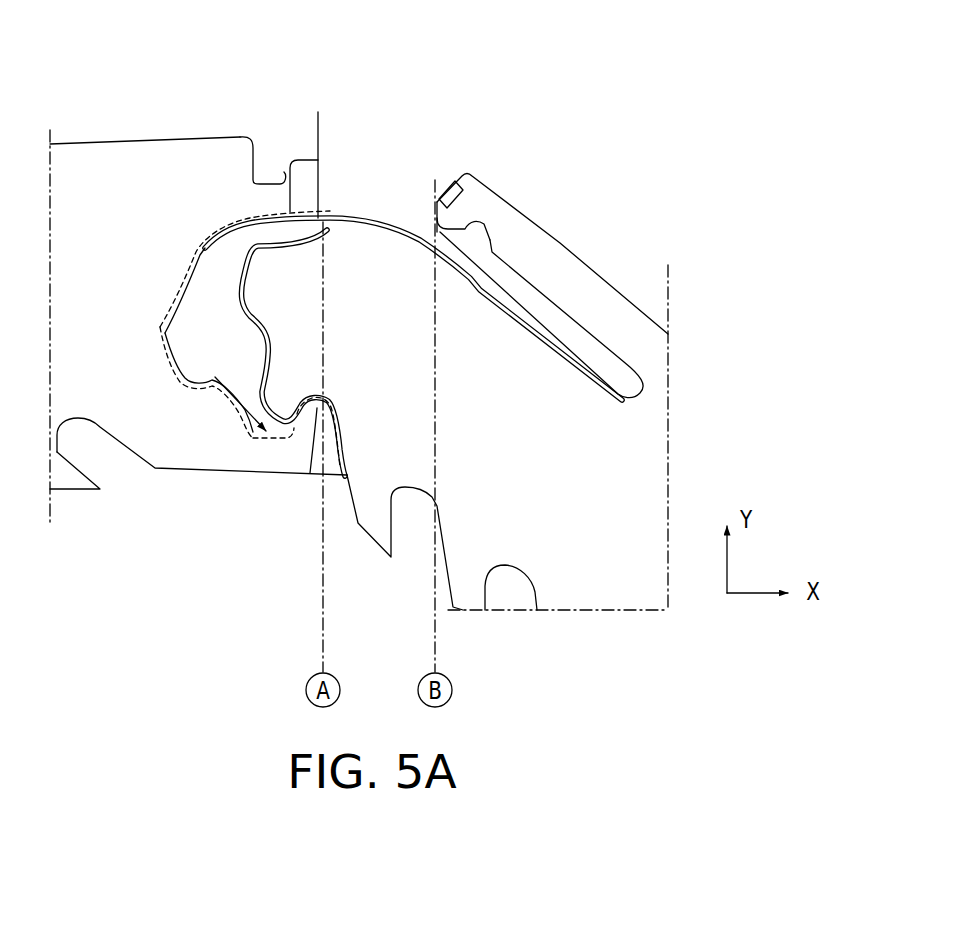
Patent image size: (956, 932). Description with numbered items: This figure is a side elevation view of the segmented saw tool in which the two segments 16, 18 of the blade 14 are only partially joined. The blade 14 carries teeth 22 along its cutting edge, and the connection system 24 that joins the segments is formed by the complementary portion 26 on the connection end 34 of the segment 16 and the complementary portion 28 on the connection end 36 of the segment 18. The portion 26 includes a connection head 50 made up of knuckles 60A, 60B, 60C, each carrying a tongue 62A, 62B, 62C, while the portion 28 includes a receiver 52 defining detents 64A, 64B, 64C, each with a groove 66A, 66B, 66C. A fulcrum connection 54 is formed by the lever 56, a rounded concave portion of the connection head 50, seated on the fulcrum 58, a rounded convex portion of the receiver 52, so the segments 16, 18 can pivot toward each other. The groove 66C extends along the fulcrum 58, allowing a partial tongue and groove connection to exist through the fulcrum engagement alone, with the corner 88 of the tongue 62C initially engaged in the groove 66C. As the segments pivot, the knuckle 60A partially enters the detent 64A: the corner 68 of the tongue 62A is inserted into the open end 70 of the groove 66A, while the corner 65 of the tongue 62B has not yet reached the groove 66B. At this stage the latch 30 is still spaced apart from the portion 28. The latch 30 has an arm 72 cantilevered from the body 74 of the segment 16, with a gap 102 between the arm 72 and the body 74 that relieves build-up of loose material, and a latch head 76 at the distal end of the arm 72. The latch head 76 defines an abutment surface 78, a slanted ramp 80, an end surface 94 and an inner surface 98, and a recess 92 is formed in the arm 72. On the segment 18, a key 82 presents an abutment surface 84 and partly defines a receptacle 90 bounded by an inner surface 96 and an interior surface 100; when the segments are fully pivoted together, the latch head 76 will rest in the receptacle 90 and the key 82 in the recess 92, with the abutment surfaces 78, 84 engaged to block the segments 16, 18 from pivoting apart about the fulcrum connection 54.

The blade 14 is at (521, 70).
The segment 16 is at (655, 480).
The segment 18 is at (67, 175).
The teeth 22 is at (73, 489).
The connection system 24 is at (441, 66).
The complementary portion 26 is at (581, 143).
The complementary portion 28 is at (240, 125).
The latch 30 is at (552, 250).
The connection end 34 is at (469, 98).
The connection end 36 is at (318, 78).
The connection head 50 is at (382, 206).
The receiver 52 is at (185, 267).
The fulcrum connection 54 is at (343, 395).
The lever 56 is at (305, 390).
The fulcrum 58 is at (310, 473).
The knuckle 60A is at (357, 237).
The knuckle 60B is at (268, 305).
The knuckle 60C is at (281, 394).
The tongue 62A is at (337, 215).
The tongue 62B is at (233, 297).
The tongue 62C is at (258, 373).
The detent 64A is at (216, 234).
The detent 64B is at (166, 330).
The detent 64C is at (264, 425).
The corner 65 is at (255, 244).
The groove 66A is at (262, 193).
The groove 66B is at (151, 347).
The groove 66C is at (230, 415).
The corner 68 is at (330, 212).
The open end 70 is at (317, 151).
The arm 72 is at (602, 303).
The body 74 is at (637, 432).
The latch head 76 is at (477, 172).
The abutment surface 78 is at (498, 237).
The ramp 80 is at (445, 188).
The key 82 is at (307, 158).
The abutment surface 84 is at (296, 176).
The corner 88 is at (180, 468).
The receptacle 90 is at (254, 131).
The recess 92 is at (520, 242).
The end surface 94 is at (449, 178).
The inner surface 96 is at (258, 158).
The inner surface 98 is at (445, 232).
The interior surface 100 is at (265, 214).
The gap 102 is at (617, 374).